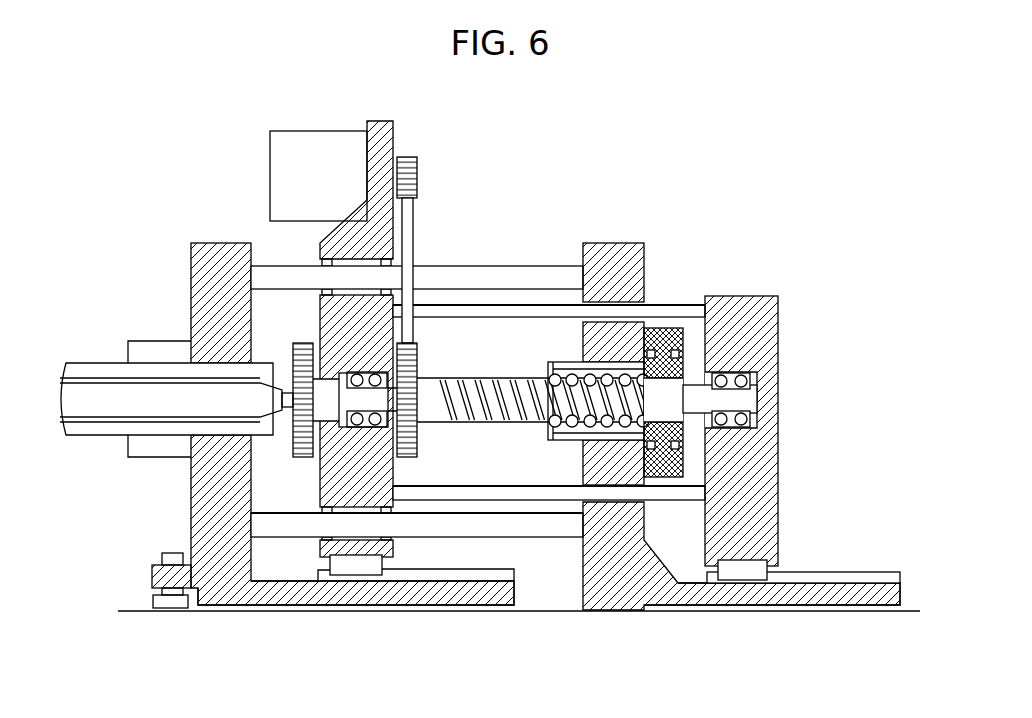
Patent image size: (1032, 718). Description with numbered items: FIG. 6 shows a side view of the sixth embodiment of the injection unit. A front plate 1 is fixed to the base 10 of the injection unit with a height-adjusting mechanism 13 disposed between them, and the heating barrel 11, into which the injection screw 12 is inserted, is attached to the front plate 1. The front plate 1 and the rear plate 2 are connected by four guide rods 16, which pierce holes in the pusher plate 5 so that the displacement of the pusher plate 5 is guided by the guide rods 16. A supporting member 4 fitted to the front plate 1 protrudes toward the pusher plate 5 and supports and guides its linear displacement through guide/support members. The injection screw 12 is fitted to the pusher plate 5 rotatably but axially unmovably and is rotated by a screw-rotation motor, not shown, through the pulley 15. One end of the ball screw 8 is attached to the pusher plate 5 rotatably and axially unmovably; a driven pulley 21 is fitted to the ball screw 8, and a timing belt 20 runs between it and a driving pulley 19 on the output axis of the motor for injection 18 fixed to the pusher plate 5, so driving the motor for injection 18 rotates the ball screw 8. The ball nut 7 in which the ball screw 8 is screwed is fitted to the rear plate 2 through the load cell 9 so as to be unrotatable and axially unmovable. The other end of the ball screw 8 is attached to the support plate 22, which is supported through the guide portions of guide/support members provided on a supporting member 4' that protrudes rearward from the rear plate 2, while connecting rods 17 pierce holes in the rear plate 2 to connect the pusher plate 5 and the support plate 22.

The front plate 1 is at (217, 243).
The rear plate 2 is at (610, 243).
The supporting member 4 is at (356, 618).
The supporting member 4' is at (772, 617).
The pusher plate 5 is at (388, 232).
The ball nut 7 is at (556, 440).
The ball screw 8 is at (507, 422).
The load cell 9 is at (660, 328).
The base 10 is at (158, 612).
The heating barrel 11 is at (105, 365).
The injection screw 12 is at (117, 408).
The height-adjusting mechanism 13 is at (170, 553).
The pulley 15 is at (305, 343).
The guide rods 16 is at (517, 272).
The connecting rods 17 is at (468, 312).
The motor for injection 18 is at (277, 165).
The driving pulley 19 is at (417, 155).
The timing belt 20 is at (417, 250).
The driven pulley 21 is at (417, 437).
The support plate 22 is at (733, 300).